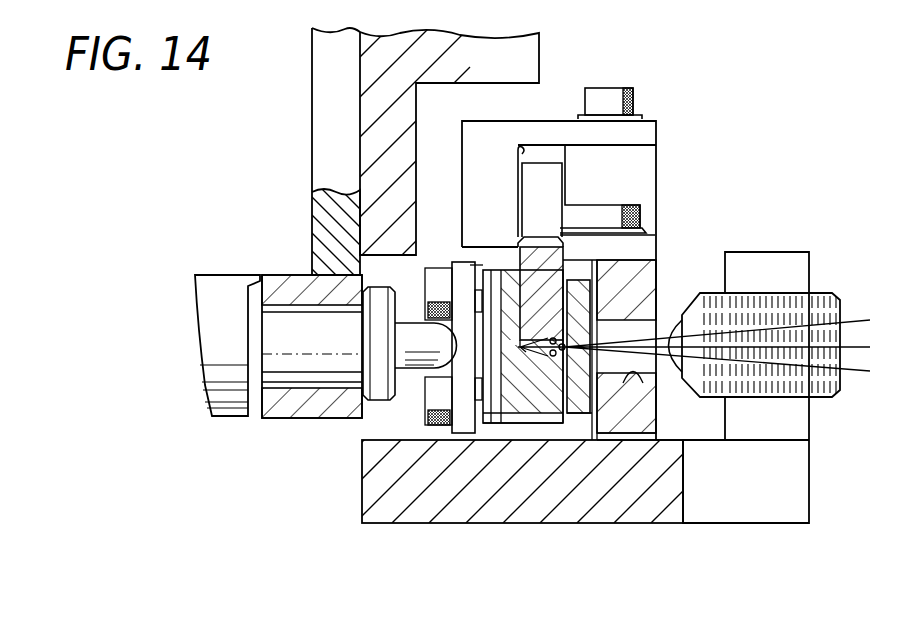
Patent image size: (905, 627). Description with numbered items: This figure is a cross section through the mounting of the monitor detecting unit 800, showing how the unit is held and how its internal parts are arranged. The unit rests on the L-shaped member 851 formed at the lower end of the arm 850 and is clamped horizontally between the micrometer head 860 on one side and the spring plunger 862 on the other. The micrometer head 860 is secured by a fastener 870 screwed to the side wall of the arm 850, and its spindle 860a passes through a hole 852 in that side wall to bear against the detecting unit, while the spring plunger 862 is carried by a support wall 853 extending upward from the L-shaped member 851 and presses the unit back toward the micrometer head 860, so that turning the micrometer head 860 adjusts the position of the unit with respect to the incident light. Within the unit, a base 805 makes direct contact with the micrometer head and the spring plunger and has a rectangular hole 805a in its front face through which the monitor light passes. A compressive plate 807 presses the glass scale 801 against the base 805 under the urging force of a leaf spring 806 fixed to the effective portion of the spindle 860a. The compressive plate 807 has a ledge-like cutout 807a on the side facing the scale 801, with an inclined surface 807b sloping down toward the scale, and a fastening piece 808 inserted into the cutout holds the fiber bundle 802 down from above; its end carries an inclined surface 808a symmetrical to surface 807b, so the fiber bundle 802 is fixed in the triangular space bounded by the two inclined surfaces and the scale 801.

The monitor detecting unit 800 is at (660, 155).
The glass scale 801 is at (650, 425).
The fiber bundle 802 is at (550, 335).
The base 805 is at (533, 425).
The rectangular hole 805a is at (630, 384).
The leaf spring 806 is at (465, 405).
The compressive plate 807 is at (508, 413).
The ledge-like cutout 807a is at (535, 358).
The inclined surface 807b is at (587, 400).
The fastening piece 808 is at (540, 278).
The inclined surface 808a is at (597, 330).
The arm 850 is at (357, 76).
The L-shaped member 851 is at (495, 512).
The hole 852 is at (393, 445).
The support wall 853 is at (773, 268).
The micrometer head 860 is at (228, 388).
The spindle 860a is at (415, 342).
The spring plunger 862 is at (712, 306).
The fastener 870 is at (328, 144).